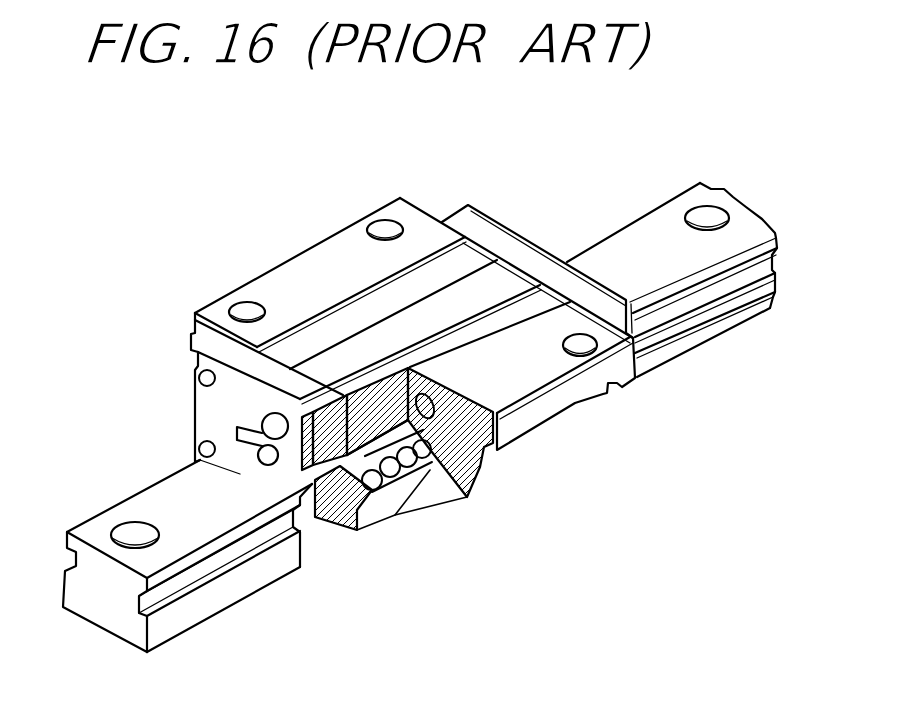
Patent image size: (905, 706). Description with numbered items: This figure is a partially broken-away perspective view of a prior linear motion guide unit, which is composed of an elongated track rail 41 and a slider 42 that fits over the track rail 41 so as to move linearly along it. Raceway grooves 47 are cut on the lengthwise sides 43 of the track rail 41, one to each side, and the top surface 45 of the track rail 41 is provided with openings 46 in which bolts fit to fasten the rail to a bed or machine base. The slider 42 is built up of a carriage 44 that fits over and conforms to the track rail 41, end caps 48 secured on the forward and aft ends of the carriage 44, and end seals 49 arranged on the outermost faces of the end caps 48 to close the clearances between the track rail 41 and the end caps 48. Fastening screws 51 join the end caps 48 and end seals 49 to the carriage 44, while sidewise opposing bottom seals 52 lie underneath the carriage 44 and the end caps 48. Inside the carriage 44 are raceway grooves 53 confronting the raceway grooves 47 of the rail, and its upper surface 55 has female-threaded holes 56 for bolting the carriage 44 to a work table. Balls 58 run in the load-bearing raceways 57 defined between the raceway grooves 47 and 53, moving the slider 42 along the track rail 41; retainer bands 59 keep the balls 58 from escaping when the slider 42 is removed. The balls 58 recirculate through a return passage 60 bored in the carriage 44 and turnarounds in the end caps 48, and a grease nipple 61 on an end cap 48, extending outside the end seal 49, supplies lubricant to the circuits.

The track rail 41 is at (668, 198).
The slider 42 is at (420, 190).
The lengthwise sides 43 is at (200, 598).
The carriage 44 is at (270, 272).
The top surface 45 is at (643, 243).
The openings 46 is at (132, 530).
The raceway grooves 47 is at (67, 550).
The end caps 48 is at (495, 247).
The end seals 49 is at (542, 247).
The fastening screws 51 is at (200, 375).
The bottom seals 52 is at (417, 495).
The raceway grooves 53 is at (420, 457).
The upper surface 55 is at (328, 268).
The holes 56 is at (383, 228).
The load-bearing raceways 57 is at (420, 490).
The balls 58 is at (405, 515).
The retainer bands 59 is at (353, 527).
The return passage 60 is at (420, 410).
The grease nipple 61 is at (253, 433).